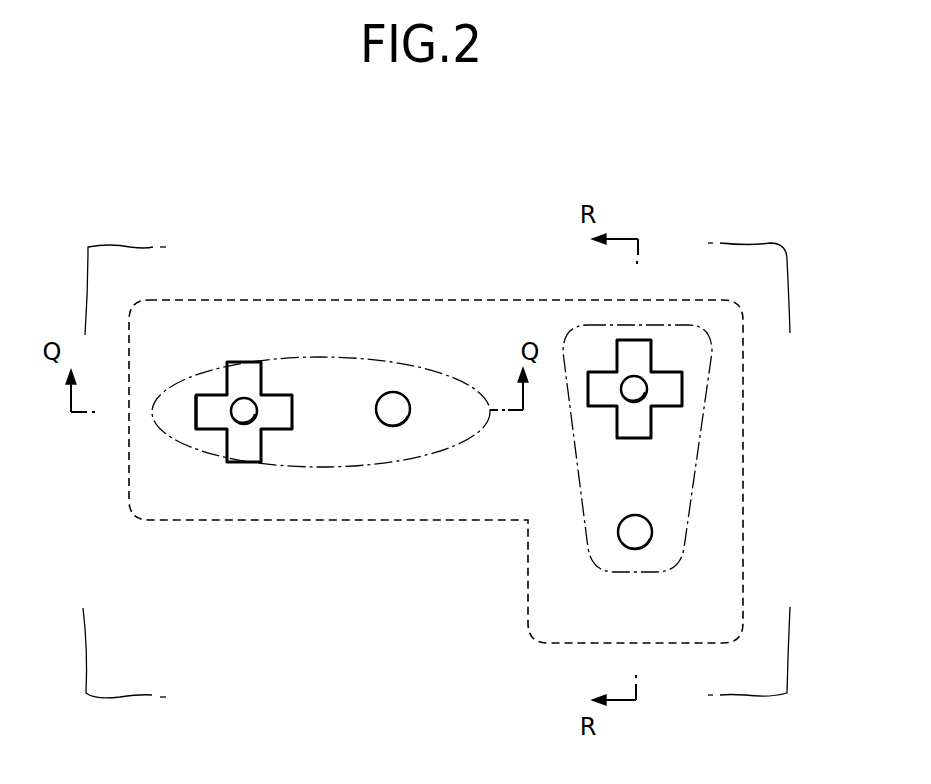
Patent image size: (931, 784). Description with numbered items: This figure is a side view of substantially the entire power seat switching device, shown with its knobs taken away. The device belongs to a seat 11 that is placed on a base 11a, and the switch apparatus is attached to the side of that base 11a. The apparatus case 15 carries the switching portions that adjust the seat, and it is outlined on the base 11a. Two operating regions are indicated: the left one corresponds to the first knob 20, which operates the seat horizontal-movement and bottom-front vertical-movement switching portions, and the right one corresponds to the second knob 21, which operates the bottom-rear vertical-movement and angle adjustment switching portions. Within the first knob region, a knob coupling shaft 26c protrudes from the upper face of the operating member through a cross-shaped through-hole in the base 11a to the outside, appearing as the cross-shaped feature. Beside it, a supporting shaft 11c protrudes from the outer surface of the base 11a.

The seat 11 is at (240, 362).
The base 11a is at (137, 665).
The supporting shaft 11c is at (404, 397).
The apparatus case 15 is at (372, 297).
The first knob 20 is at (312, 357).
The second knob 21 is at (717, 408).
The knob coupling shaft 26c is at (195, 418).